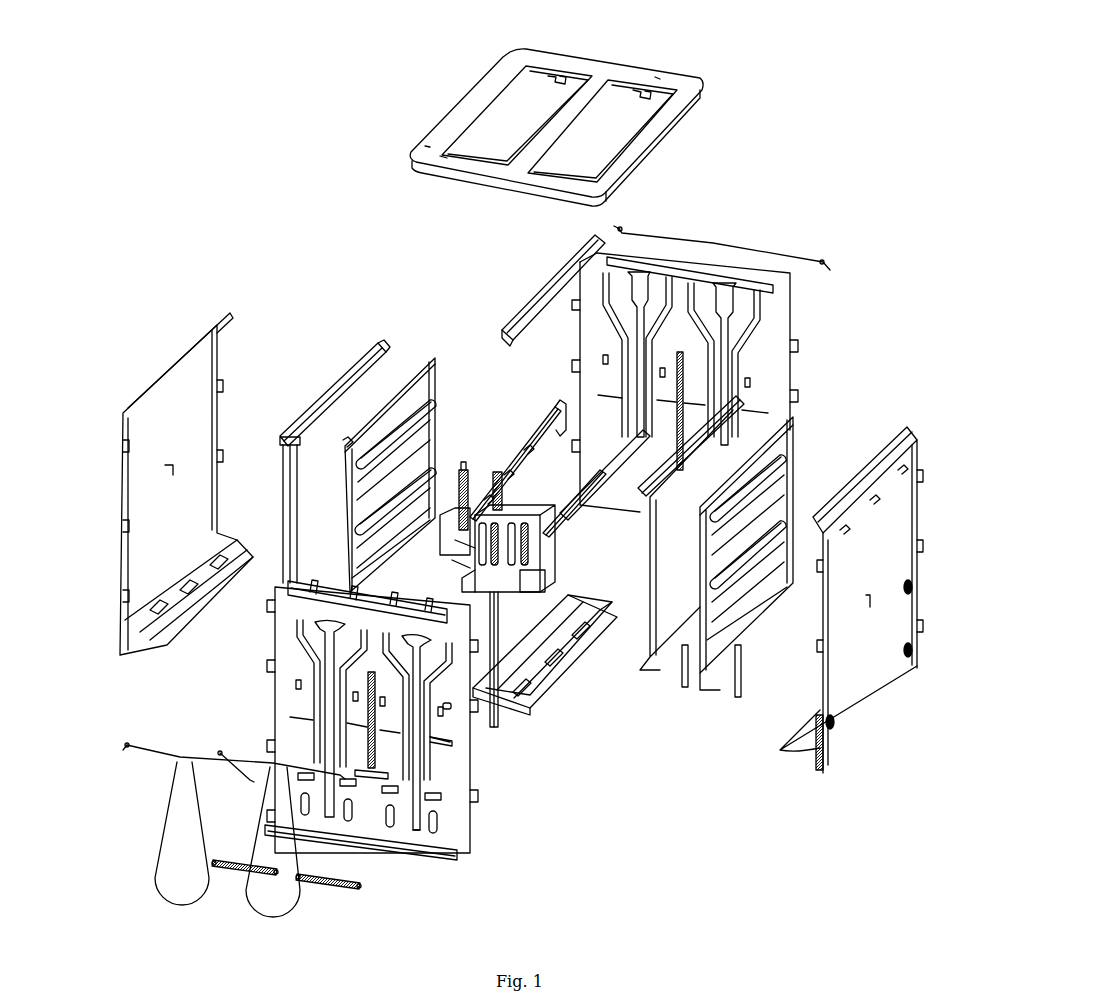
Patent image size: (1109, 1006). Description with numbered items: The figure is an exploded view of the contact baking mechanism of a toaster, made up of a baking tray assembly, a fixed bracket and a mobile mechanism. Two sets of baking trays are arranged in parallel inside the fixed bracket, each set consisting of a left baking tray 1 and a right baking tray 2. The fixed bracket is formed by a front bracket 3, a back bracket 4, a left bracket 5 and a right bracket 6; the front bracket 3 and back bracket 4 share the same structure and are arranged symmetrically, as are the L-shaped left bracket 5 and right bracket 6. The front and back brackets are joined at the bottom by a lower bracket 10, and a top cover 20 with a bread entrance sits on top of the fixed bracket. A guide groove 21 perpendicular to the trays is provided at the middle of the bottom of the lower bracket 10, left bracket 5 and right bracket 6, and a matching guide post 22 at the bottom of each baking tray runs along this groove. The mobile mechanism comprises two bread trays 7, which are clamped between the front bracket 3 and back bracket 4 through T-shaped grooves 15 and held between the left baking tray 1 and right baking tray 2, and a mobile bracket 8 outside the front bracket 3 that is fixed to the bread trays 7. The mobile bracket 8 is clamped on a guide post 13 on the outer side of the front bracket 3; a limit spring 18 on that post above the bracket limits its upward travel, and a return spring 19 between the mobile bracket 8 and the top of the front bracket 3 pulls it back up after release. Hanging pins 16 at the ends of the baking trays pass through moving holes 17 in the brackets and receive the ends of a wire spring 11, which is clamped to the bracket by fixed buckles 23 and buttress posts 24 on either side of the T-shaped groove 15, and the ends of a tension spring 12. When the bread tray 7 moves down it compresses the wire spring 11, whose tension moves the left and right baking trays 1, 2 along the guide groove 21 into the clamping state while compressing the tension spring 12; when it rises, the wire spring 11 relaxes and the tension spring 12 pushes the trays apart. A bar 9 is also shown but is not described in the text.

The left baking tray 1 is at (340, 355).
The right baking tray 2 is at (420, 415).
The front bracket 3 is at (280, 725).
The back bracket 4 is at (775, 308).
The left bracket 5 is at (122, 520).
The right bracket 6 is at (905, 613).
The bread tray 7 is at (543, 412).
The mobile bracket 8 is at (552, 568).
The support rod 9 is at (508, 330).
The lower bracket 10 is at (535, 677).
The wire spring 11 is at (651, 234).
The tension spring 12 is at (278, 876).
The guide post 13 is at (498, 718).
The T-shaped groove 15 is at (417, 833).
The hanging pin 16 is at (280, 435).
The moving hole of the hanging pin 17 is at (288, 590).
The limit spring 18 is at (504, 488).
The return spring 19 is at (463, 462).
The top cover 20 is at (592, 60).
The guide groove 21 is at (563, 655).
The guide post 22 is at (742, 690).
The fixed buckle 23 is at (452, 744).
The buttress post 24 is at (451, 707).